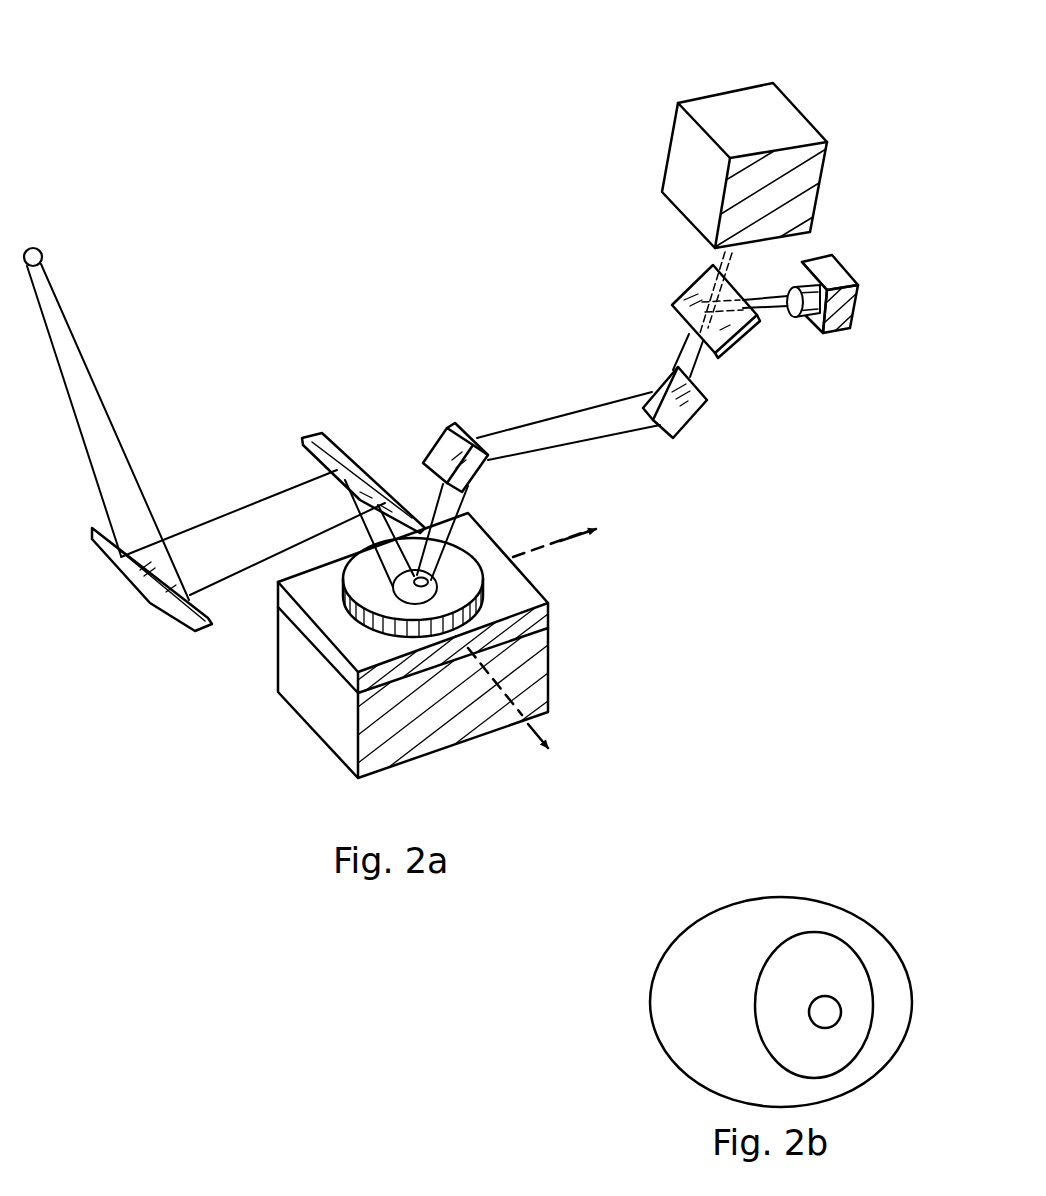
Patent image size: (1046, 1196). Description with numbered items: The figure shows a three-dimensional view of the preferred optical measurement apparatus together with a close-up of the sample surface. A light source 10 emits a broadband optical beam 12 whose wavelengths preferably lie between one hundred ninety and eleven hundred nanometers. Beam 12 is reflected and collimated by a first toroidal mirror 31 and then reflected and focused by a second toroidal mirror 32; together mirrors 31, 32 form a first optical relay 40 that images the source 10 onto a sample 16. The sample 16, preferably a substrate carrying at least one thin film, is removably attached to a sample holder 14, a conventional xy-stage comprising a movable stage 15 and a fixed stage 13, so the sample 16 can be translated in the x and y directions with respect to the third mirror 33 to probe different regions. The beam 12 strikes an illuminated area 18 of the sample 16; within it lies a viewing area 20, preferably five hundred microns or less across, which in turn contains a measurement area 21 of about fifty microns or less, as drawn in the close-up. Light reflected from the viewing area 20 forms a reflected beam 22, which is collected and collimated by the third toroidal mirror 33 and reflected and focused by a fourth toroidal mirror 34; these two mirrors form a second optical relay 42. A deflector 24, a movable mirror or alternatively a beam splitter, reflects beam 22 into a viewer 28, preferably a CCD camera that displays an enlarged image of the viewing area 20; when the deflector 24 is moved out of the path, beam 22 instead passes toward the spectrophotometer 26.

In FIG. 2a, the light source 10 is at (38, 249).
In FIG. 2a, the broadband optical beam 12 is at (90, 363).
In FIG. 2a, the fixed stage 13 is at (315, 707).
In FIG. 2a, the sample holder 14 is at (603, 673).
In FIG. 2a, the movable stage 15 is at (310, 633).
In FIG. 2a, the sample 16 is at (487, 580).
In FIG. 2a, the illuminated area 18 is at (408, 592).
In FIG. 2b, the illuminated area 18 is at (683, 988).
In FIG. 2a, the viewing area 20 is at (433, 593).
In FIG. 2b, the viewing area 20 is at (798, 968).
In FIG. 2b, the measurement area 21 is at (831, 1010).
In FIG. 2a, the reflected beam 22 is at (560, 450).
In FIG. 2a, the deflector 24 is at (742, 340).
In FIG. 2a, the spectrophotometer 26 is at (720, 92).
In FIG. 2a, the viewer 28 is at (845, 262).
In FIG. 2a, the first toroidal mirror 31 is at (170, 621).
In FIG. 2a, the second toroidal mirror 32 is at (345, 437).
In FIG. 2a, the third toroidal mirror 33 is at (464, 428).
In FIG. 2a, the fourth toroidal mirror 34 is at (700, 413).
In FIG. 2a, the first optical relay 40 is at (224, 458).
In FIG. 2a, the second optical relay 42 is at (588, 376).